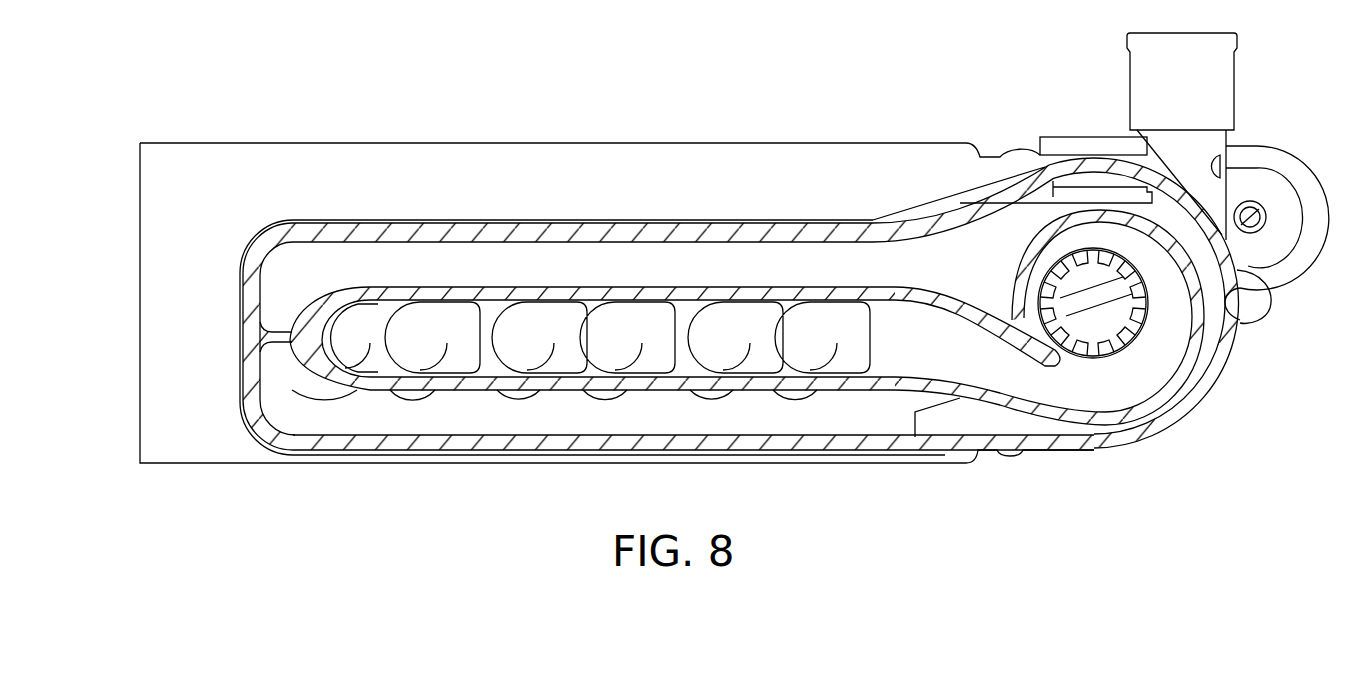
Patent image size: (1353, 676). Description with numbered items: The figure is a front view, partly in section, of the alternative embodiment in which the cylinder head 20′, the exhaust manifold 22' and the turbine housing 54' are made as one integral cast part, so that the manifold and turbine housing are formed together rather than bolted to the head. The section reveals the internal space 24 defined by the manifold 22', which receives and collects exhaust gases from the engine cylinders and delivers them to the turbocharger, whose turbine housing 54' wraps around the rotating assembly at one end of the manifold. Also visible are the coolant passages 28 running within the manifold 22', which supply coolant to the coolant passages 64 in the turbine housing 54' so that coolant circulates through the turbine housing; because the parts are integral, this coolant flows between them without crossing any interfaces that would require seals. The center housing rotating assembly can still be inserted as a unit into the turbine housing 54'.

The cylinder head 20′ is at (160, 180).
The manifold 22' is at (667, 316).
The internal space 24 is at (938, 337).
The coolant passages 28 is at (625, 260).
The turbine housing 54' is at (1081, 303).
The coolant passages 64 is at (1212, 272).